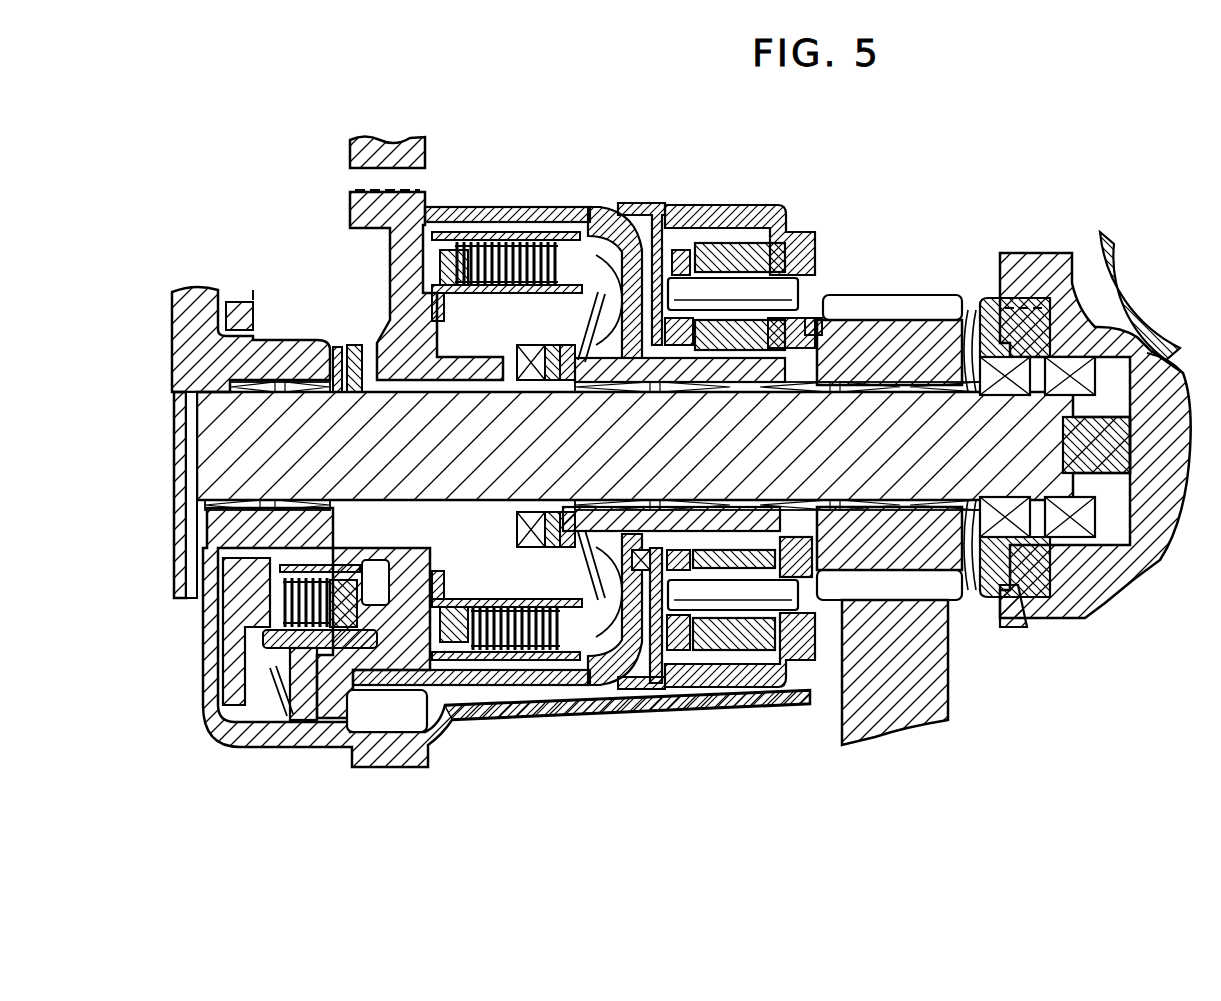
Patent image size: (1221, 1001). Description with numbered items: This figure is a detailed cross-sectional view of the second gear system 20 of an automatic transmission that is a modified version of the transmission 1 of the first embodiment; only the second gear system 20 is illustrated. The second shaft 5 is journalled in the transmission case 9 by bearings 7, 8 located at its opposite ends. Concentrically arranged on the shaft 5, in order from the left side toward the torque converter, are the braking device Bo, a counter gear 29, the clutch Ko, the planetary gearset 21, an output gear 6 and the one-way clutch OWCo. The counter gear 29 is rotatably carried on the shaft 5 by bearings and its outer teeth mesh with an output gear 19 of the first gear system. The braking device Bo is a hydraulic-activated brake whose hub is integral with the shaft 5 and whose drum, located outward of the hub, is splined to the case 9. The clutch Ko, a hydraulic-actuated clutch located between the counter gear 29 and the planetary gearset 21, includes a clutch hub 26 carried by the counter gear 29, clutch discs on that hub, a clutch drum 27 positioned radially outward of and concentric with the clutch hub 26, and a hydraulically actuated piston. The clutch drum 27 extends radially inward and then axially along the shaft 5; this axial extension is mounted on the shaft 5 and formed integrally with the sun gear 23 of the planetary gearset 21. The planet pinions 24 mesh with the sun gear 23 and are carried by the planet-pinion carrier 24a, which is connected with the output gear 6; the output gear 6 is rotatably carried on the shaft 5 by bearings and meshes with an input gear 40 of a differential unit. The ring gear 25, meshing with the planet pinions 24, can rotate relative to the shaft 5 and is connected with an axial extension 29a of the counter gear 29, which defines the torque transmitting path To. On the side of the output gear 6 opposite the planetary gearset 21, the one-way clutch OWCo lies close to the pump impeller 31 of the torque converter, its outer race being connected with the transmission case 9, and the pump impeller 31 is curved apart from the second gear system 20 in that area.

The transmission 1 is at (445, 854).
The second shaft 5 is at (660, 458).
The output gear 6 is at (935, 335).
The bearing 7 is at (1103, 577).
The bearing 8 is at (190, 560).
The transmission case 9 is at (1155, 410).
The output gear of the first gear system 19 is at (388, 145).
The second gear system 20 is at (545, 728).
The planetary gearset 21 is at (658, 684).
The sun gear 23 is at (780, 320).
The planet pinions 24 is at (748, 252).
The planet-pinion carrier 24a is at (812, 318).
The ring gear 25 is at (735, 205).
The clutch hub 26 is at (500, 607).
The clutch drum 27 is at (590, 672).
The counter gear 29 is at (412, 192).
The axial extension 29a is at (492, 207).
The pump impeller 31 is at (1130, 282).
The input gear of a differential unit 40 is at (925, 692).
The clutch Ko is at (452, 599).
The braking device Bo is at (262, 612).
The torque transmitting path To is at (645, 692).
The one-way clutch OWCo is at (1012, 603).